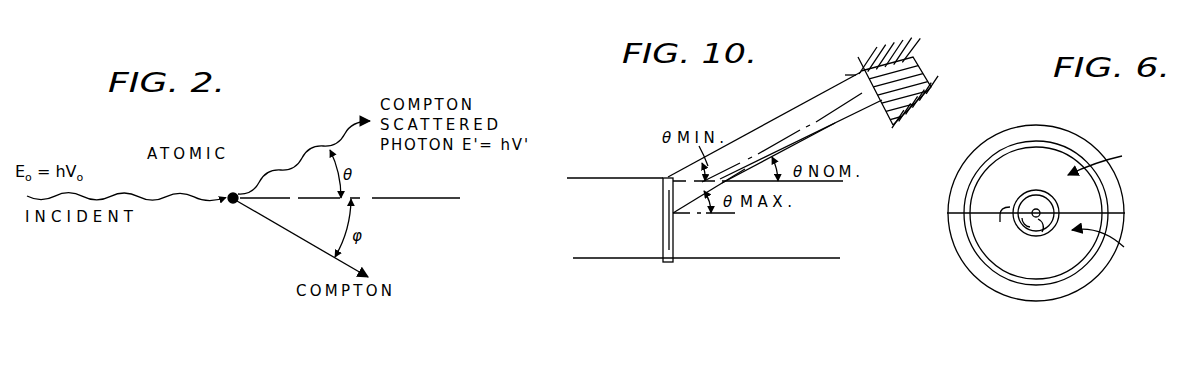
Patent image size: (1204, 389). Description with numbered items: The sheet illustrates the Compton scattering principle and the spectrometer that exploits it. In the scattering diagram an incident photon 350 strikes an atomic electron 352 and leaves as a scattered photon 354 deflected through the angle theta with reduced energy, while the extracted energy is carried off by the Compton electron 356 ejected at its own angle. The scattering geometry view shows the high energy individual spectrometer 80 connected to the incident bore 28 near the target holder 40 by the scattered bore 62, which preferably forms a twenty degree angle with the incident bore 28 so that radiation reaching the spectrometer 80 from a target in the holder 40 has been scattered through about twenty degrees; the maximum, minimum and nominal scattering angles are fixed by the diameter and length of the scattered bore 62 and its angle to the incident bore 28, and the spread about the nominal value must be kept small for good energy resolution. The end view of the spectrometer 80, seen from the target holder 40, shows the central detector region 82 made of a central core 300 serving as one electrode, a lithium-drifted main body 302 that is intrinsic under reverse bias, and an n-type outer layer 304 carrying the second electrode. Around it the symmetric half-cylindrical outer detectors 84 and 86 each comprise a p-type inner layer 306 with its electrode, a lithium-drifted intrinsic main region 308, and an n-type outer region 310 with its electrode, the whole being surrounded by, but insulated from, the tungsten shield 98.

In FIG. 2, the incident photon 350 is at (126, 218).
In FIG. 2, the atomic electron 352 is at (192, 184).
In FIG. 2, the scattered photon 354 is at (368, 120).
In FIG. 2, the Compton electron 356 is at (350, 260).
In FIG. 10, the bore 28 is at (630, 247).
In FIG. 10, the target holder 40 is at (673, 246).
In FIG. 10, the bore 62 is at (834, 114).
In FIG. 10, the individual spectrometer 80 is at (856, 75).
In FIG. 10, the central detector region 82 is at (917, 80).
In FIG. 6, the central detector region 82 is at (1036, 200).
In FIG. 6, the outer detector 84 is at (1105, 163).
In FIG. 6, the outer detector 86 is at (1108, 245).
In FIG. 6, the tungsten shield 98 is at (1044, 143).
In FIG. 6, the central core 300 is at (1040, 213).
In FIG. 6, the main body 302 is at (1040, 226).
In FIG. 6, the outer layer 304 is at (1022, 226).
In FIG. 6, the inner layer 306 is at (1000, 222).
In FIG. 6, the main region 308 is at (987, 200).
In FIG. 6, the outer region 310 is at (968, 188).